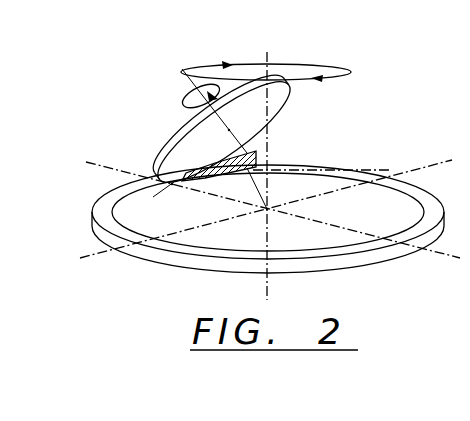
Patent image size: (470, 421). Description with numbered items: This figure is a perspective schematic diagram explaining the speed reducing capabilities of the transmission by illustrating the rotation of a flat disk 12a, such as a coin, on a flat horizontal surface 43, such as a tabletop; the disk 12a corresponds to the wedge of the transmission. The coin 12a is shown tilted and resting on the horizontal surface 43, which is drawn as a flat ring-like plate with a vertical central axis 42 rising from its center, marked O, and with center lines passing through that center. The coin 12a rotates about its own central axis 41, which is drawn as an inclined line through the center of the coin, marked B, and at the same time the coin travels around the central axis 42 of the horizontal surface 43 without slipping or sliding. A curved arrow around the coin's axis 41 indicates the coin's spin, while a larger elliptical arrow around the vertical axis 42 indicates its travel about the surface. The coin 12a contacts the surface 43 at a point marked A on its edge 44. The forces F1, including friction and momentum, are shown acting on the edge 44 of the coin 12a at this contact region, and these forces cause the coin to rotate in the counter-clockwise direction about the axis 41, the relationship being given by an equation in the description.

The flat disk 12a is at (173, 138).
The central axis 41 is at (195, 88).
The central axis 42 is at (268, 55).
The horizontal surface 43 is at (172, 245).
The edge 44 is at (152, 174).
The forces F1 is at (230, 174).
The contact point A is at (170, 199).
The wheel center B is at (238, 136).
The workpiece center O is at (277, 224).